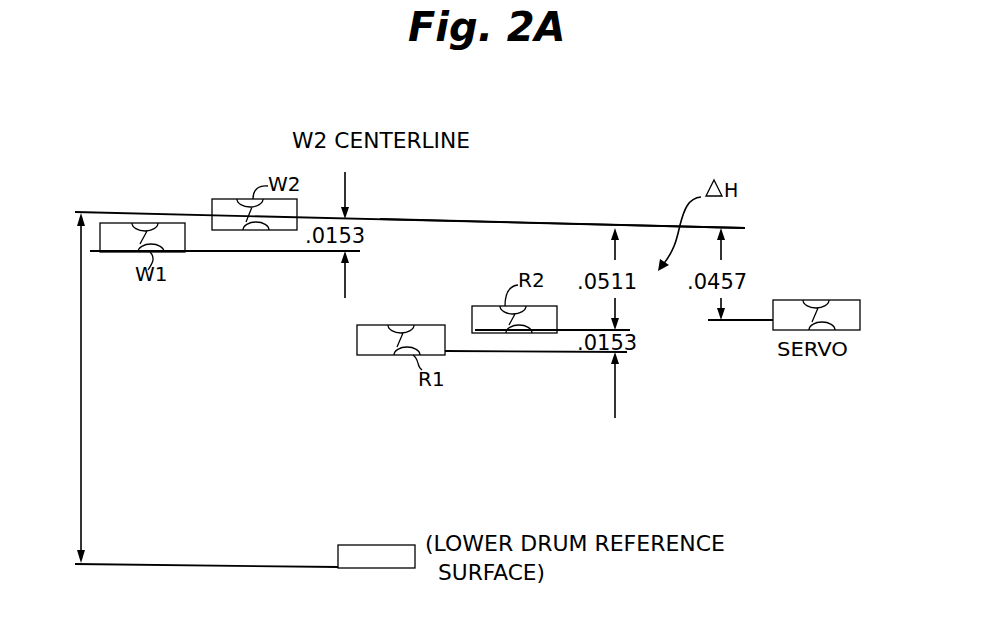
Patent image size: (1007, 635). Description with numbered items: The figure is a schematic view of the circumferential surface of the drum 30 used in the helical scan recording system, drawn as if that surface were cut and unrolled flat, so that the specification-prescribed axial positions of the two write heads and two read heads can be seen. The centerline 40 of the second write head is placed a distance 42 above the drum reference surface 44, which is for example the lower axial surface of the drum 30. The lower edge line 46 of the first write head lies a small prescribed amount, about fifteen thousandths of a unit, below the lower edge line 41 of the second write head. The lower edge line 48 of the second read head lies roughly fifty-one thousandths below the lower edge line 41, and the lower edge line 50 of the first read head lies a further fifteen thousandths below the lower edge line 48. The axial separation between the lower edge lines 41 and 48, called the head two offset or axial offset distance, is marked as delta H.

The drum 30 is at (590, 146).
The centerline of head W2 40 is at (131, 207).
The lower edge line of head W2 41 is at (483, 222).
The distance 42 is at (87, 374).
The drum reference surface 44 is at (212, 565).
The lower edge line of head W1 46 is at (237, 251).
The lower edge line of head R2 48 is at (619, 328).
The lower edge line of head R1 50 is at (517, 352).